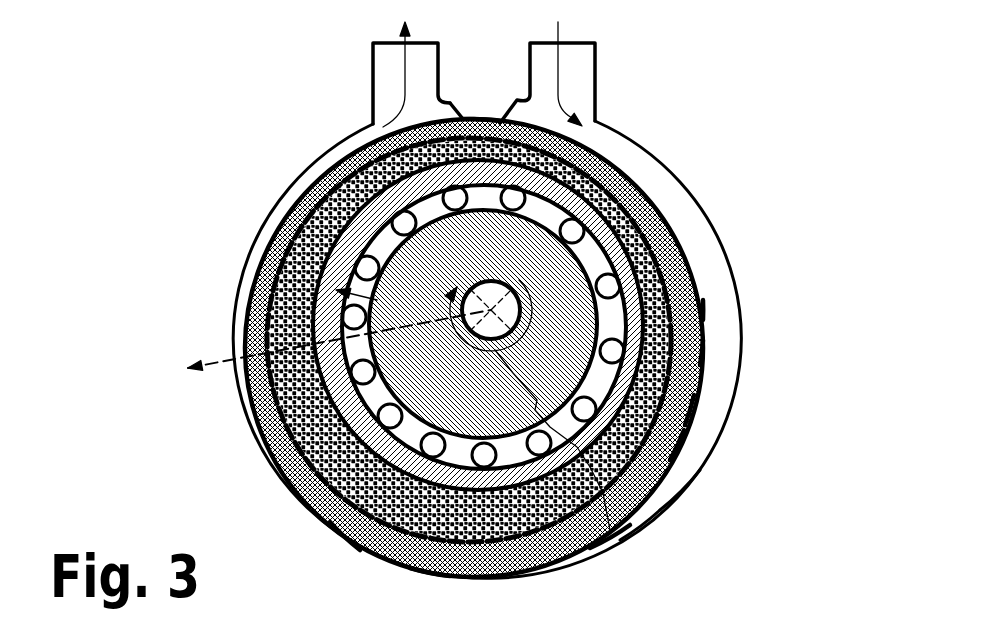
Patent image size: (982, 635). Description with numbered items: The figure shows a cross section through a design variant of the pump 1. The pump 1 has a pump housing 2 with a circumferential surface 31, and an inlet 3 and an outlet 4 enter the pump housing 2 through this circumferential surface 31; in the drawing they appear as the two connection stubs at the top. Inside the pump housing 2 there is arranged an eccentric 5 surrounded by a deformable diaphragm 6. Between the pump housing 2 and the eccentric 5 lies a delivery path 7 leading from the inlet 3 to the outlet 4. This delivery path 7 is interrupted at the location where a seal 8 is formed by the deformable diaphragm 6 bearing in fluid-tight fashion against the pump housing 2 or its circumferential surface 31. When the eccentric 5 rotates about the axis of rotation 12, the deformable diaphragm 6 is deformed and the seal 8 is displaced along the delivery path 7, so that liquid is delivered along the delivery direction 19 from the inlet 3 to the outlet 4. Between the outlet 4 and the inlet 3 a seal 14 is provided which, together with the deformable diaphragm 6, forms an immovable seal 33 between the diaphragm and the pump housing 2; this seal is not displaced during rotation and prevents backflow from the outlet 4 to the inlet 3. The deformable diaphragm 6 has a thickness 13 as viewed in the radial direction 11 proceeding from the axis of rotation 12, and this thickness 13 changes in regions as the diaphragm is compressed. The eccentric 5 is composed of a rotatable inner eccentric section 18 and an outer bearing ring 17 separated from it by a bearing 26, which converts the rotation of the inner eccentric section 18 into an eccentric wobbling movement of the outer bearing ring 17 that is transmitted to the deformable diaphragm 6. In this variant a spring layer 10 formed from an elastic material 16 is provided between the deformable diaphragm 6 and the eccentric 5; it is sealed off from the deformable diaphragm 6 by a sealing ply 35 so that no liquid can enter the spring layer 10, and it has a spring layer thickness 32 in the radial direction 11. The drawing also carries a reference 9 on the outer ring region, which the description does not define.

The pump 1 is at (276, 138).
The pump housing 2 is at (668, 166).
The inlet 3 is at (588, 44).
The outlet 4 is at (390, 43).
The eccentric 5 is at (707, 317).
The deformable diaphragm 6 is at (707, 343).
The delivery path 7 is at (682, 465).
The seal 8 is at (345, 545).
The shell ring 9 is at (610, 530).
The spring layer 10 is at (698, 410).
The radial direction 11 is at (217, 360).
The axis of rotation 12 is at (491, 310).
The thickness 13 is at (292, 198).
The seal 14 is at (468, 120).
The elastic material 16 is at (690, 437).
The outer bearing ring 17 is at (657, 200).
The inner eccentric section 18 is at (693, 268).
The delivery direction 19 is at (408, 70).
The bearing 26 is at (573, 278).
The circumferential surface 31 is at (660, 510).
The spring layer thickness 32 is at (255, 280).
The immovable seal 33 is at (478, 122).
The sealing ply 35 is at (430, 565).